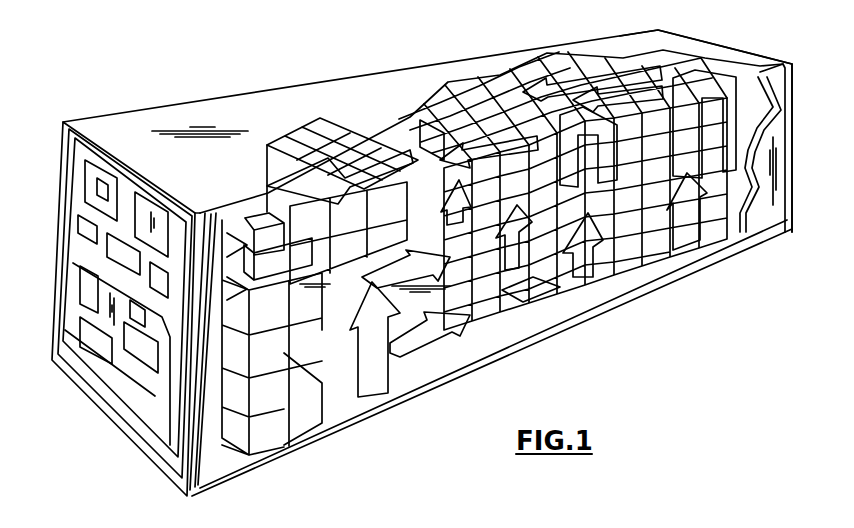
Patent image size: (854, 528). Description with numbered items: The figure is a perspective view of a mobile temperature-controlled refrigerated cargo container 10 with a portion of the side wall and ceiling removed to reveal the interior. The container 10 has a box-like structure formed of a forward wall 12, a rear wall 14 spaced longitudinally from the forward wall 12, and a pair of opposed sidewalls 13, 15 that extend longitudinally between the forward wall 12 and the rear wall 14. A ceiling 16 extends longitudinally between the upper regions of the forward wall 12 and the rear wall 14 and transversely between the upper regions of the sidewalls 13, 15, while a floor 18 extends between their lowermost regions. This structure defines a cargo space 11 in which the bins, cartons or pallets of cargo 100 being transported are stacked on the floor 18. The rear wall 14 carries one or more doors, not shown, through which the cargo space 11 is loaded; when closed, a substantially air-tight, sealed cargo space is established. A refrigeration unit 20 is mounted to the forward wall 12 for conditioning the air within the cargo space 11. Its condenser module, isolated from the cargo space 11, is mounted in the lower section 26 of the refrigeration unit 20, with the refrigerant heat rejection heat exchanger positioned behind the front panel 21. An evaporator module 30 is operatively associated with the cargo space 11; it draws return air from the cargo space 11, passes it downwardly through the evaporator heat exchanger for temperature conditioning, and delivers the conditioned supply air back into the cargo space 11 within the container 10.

The cargo container 10 is at (333, 79).
The cargo space 11 is at (488, 268).
The forward wall 12 is at (190, 413).
The sidewall 13 is at (767, 205).
The rear wall 14 is at (793, 150).
The sidewall 15 is at (630, 63).
The ceiling 16 is at (393, 100).
The floor 18 is at (408, 398).
The refrigeration unit 20 is at (93, 248).
The front panel 21 is at (132, 235).
The lower section 26 is at (123, 358).
The evaporator module 30 is at (225, 258).
The cargo 100 is at (643, 213).